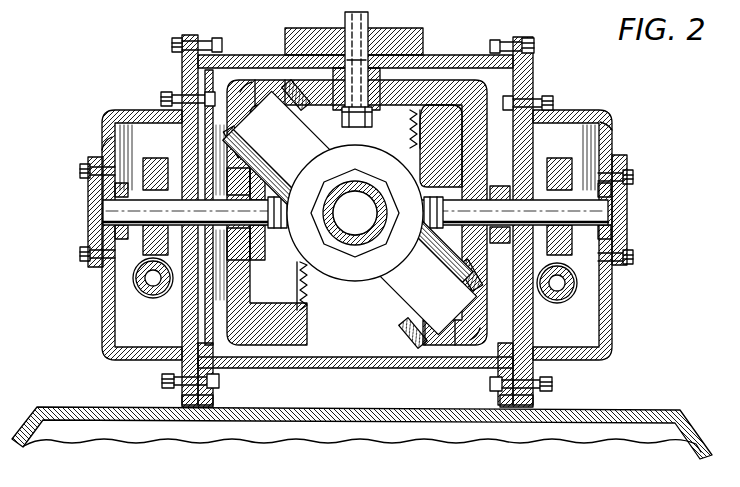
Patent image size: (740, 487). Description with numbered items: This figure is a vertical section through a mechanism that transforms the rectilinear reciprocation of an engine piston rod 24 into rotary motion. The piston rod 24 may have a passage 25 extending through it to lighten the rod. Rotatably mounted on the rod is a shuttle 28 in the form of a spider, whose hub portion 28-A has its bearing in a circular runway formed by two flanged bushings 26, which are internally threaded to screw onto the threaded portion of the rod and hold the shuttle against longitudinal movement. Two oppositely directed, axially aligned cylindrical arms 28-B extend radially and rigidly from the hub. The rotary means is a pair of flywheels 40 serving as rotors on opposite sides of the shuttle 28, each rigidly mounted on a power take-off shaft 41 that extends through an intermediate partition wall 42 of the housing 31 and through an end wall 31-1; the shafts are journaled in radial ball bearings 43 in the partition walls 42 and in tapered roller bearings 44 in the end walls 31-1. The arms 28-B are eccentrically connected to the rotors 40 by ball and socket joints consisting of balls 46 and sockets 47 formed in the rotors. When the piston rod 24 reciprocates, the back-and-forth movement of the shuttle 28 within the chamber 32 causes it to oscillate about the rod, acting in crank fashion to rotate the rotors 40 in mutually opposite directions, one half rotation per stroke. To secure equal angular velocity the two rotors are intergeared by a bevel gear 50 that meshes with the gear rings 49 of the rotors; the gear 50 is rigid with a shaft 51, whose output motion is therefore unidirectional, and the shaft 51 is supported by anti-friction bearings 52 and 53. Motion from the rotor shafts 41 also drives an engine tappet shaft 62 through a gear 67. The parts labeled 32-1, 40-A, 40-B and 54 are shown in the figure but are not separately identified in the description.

The piston rod 24 is at (375, 192).
The passage 25 is at (368, 208).
The flanged bushings 26 is at (333, 183).
The shuttle 28 is at (350, 212).
The hub portion 28-A is at (417, 132).
The cylindrical arms 28-B is at (277, 260).
The housing 31 is at (537, 54).
The end walls 31-1 is at (87, 165).
The chamber 32 is at (323, 343).
The side cover 32-1 is at (128, 134).
The flywheels 40 is at (500, 84).
The housing bearing seat 40-A is at (267, 80).
The housing bearing seat 40-B is at (242, 82).
The power take-off shafts 41 is at (88, 217).
The partition walls 42 is at (182, 63).
The radial ball bearings 43 is at (566, 111).
The tapered roller bearings 44 is at (88, 198).
The balls 46 is at (305, 110).
The sockets 47 is at (230, 143).
The gear rings 49 is at (400, 290).
The bevel gear 50 is at (385, 112).
The shaft 51 is at (370, 27).
The anti-friction bearing 52 is at (423, 56).
The anti-friction bearing 53 is at (378, 36).
The boss 54 is at (321, 30).
The tappet shaft 62 is at (136, 276).
The gear 67 is at (137, 287).